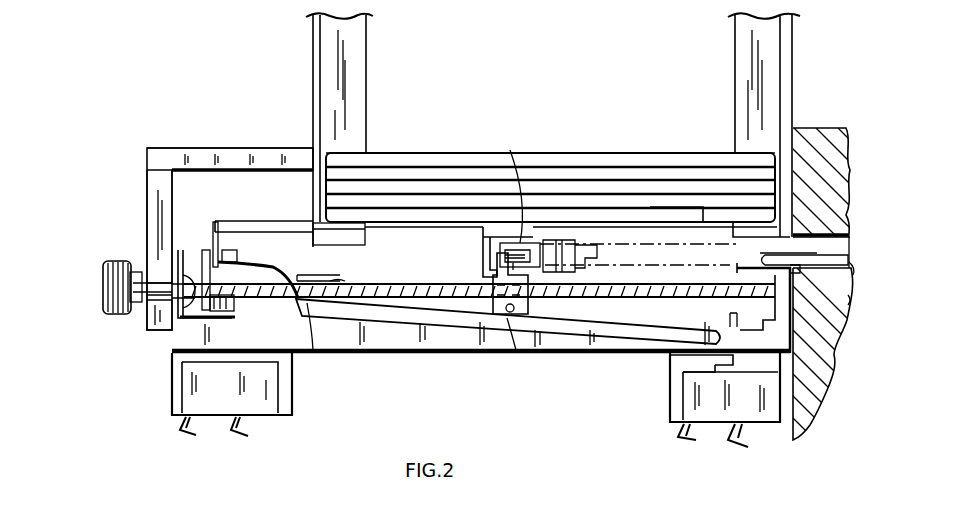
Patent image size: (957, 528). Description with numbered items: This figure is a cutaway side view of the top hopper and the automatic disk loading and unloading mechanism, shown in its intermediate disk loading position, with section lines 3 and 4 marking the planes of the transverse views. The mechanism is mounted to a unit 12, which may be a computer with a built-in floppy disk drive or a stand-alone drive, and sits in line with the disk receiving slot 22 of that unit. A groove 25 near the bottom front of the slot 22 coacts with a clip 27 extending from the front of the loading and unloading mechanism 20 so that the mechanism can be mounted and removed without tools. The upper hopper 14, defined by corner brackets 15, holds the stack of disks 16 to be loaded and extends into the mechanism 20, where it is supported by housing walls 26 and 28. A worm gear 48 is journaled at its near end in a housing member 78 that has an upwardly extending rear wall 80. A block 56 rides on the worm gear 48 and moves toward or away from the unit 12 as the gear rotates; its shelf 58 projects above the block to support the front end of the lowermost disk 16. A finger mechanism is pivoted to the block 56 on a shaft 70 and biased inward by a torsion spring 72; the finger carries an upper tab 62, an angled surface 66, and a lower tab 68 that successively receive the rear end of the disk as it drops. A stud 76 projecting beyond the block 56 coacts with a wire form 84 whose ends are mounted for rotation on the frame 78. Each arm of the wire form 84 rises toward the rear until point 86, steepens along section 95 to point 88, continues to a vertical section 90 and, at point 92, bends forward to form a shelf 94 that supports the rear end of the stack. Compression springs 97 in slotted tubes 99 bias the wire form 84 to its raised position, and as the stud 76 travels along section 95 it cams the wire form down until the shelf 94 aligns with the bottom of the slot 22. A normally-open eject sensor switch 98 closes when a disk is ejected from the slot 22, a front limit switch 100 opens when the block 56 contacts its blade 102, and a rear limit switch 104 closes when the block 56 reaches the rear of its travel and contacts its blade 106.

The section line 3- 3 is at (98, 207).
The section line 4- 4 is at (104, 58).
The unit 12 is at (836, 146).
The upper hopper 14 is at (444, 82).
The corner brackets 15 is at (313, 60).
The disks 16 is at (622, 160).
The loading and unloading mechanism 20 is at (146, 135).
The disk receiving slot 22 is at (853, 268).
The groove 25 is at (848, 302).
The housing wall 26 is at (150, 238).
The clip 27 is at (850, 252).
The housing wall 28 is at (220, 155).
The worm gear 48 is at (600, 302).
The block 56 is at (482, 316).
The shelf 58 is at (484, 265).
The tab or shelf 62 is at (580, 244).
The angled surface 66 is at (598, 260).
The tab or shelf 68 is at (585, 262).
The shaft 70 is at (510, 152).
The torsion spring 72 is at (500, 255).
The stud 76 is at (513, 340).
The housing member 78 is at (392, 346).
The rear wall 80 is at (181, 252).
The wire form 84 is at (600, 328).
The point 86 is at (312, 348).
The point 88 is at (322, 276).
The vertical section 90 is at (214, 222).
The point 92 is at (228, 222).
The shelf 94 is at (551, 233).
The sections 95 is at (326, 275).
The compression springs 97 is at (273, 265).
The eject sensor switch 98 is at (790, 263).
The slotted tubes 99 is at (244, 255).
The front limit switch 100 is at (690, 405).
The blade 102 is at (718, 364).
The rear limit switch 104 is at (205, 383).
The blade 106 is at (240, 313).